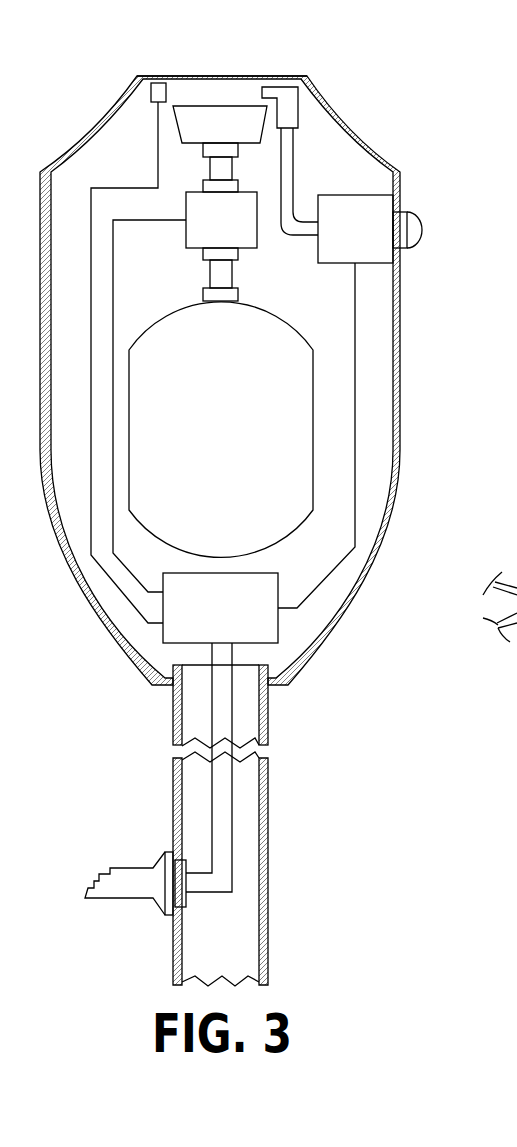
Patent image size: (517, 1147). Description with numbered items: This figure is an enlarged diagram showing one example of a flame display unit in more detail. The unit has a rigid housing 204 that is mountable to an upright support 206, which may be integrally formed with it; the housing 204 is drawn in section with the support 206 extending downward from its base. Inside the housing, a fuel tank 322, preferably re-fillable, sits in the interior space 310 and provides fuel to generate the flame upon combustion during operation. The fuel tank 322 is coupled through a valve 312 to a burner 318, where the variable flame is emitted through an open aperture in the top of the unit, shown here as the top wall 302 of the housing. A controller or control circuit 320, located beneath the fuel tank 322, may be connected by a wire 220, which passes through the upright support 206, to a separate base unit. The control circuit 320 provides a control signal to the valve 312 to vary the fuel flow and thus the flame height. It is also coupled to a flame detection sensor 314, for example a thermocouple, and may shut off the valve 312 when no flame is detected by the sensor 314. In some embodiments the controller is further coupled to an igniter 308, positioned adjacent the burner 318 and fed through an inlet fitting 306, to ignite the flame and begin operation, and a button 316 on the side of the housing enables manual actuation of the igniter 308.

The rigid housing 204 is at (400, 323).
The upright support 206 is at (268, 878).
The wire 220 is at (136, 868).
The top wall 302 is at (237, 76).
The inlet 306 is at (280, 87).
The igniter 308 is at (337, 247).
The interior chamber 310 is at (139, 289).
The valve 312 is at (203, 232).
The flame detection sensor 314 is at (158, 83).
The button 316 is at (422, 230).
The burner 318 is at (211, 106).
The control circuit 320 is at (203, 623).
The fuel tank 322 is at (204, 447).